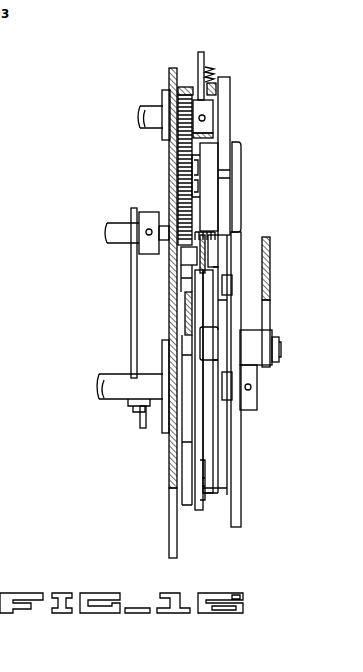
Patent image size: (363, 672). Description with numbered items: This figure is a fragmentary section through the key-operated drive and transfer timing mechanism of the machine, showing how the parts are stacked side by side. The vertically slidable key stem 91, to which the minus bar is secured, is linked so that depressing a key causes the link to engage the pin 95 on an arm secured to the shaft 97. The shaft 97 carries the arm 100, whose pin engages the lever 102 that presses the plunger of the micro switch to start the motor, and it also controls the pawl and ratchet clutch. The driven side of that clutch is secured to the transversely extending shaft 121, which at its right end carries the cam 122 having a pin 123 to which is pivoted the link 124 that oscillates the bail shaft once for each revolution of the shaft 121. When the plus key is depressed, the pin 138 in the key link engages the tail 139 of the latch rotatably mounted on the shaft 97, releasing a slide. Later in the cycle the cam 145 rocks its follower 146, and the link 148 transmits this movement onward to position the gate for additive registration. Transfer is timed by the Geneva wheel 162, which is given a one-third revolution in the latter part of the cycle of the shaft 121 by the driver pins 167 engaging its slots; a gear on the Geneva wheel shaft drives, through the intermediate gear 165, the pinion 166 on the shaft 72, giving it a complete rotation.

The shaft 72 is at (152, 110).
The key stem 91 is at (203, 68).
The pin 95 is at (200, 285).
The shaft 97 is at (117, 228).
The arm 100 is at (132, 336).
The lever 102 is at (142, 418).
The transversely extending shaft 121 is at (122, 383).
The cam 122 is at (236, 474).
The pin 123 is at (281, 350).
The link 124 is at (269, 318).
The pin 138 is at (176, 260).
The tail 139 is at (177, 277).
The cam 145 is at (213, 442).
The follower 146 is at (195, 442).
The link 148 is at (184, 305).
The Geneva wheel 162 is at (226, 120).
The intermediate gear 165 is at (183, 180).
The pinion 166 is at (185, 87).
The driver pins 167 is at (228, 283).